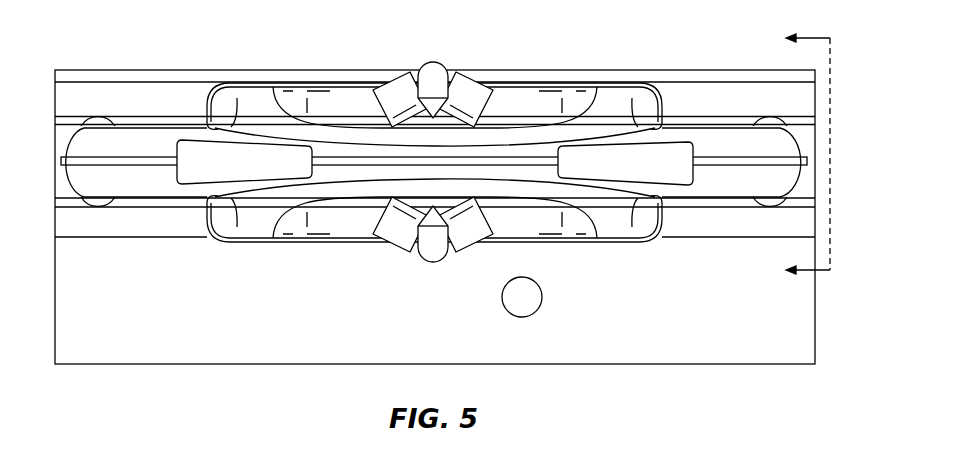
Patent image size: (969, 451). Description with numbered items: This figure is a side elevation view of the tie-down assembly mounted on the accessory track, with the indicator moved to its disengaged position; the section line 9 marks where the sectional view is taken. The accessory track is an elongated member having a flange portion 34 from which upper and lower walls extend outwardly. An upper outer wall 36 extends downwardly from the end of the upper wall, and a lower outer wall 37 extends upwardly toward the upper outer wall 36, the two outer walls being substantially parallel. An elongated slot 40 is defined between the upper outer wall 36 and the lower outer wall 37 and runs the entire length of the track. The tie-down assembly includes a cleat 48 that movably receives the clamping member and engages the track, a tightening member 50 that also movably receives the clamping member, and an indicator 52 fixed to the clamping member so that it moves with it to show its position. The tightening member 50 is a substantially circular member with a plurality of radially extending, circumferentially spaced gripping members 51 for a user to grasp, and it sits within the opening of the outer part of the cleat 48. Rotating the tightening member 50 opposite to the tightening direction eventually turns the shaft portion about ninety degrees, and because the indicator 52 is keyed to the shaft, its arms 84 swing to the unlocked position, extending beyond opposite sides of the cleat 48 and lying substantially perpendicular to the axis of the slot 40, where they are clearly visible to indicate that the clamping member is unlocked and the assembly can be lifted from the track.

The flange portion 34 is at (752, 350).
The upper outer wall 36 is at (66, 97).
The lower outer wall 37 is at (66, 220).
The elongated slot 40 is at (66, 133).
The cleat 48 is at (642, 83).
The tightening member 50 is at (455, 163).
The gripping members 51 is at (397, 80).
The indicator 52 is at (443, 63).
The indicator arms 84 is at (432, 70).
The section line 9- 9 is at (799, 156).